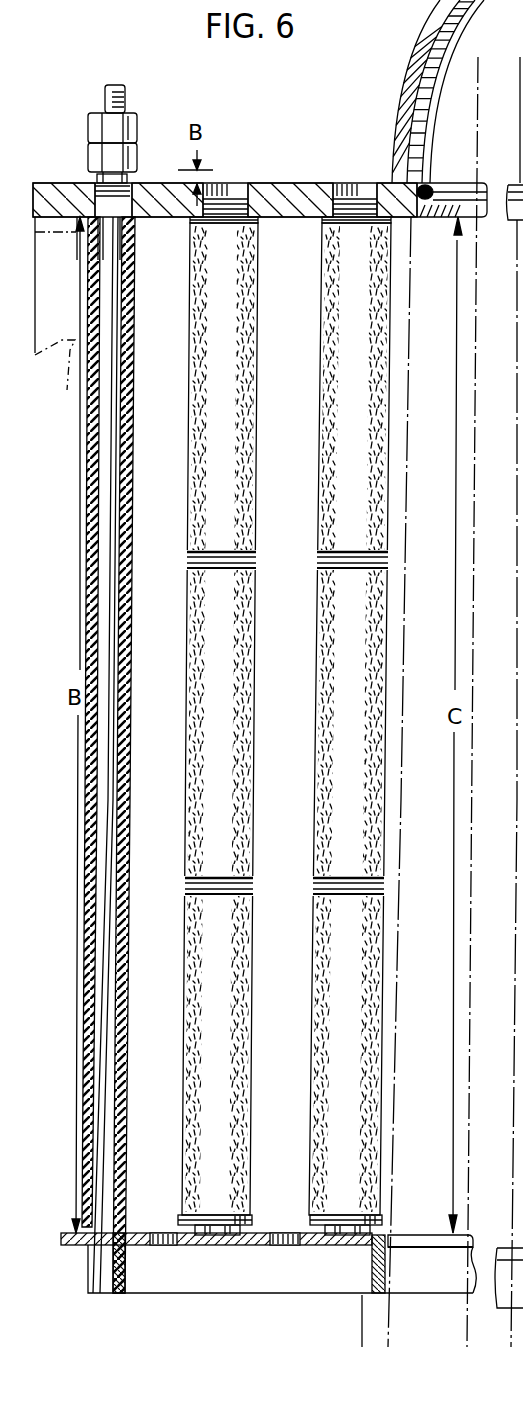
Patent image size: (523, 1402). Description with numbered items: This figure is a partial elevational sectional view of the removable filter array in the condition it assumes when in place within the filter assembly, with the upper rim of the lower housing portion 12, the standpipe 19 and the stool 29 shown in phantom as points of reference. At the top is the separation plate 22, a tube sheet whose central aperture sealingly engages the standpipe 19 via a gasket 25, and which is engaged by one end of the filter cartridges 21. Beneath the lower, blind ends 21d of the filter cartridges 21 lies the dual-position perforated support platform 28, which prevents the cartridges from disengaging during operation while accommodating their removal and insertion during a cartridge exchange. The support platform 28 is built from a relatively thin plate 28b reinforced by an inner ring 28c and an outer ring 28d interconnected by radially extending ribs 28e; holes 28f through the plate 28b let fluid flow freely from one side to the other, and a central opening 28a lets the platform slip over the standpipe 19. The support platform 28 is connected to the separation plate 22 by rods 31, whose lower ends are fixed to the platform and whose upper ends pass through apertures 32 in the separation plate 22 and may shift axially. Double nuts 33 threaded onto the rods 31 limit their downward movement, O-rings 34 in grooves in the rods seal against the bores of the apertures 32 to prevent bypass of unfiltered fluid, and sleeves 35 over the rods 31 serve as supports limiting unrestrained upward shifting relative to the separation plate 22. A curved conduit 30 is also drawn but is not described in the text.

The lower housing portion 12 is at (67, 722).
The standpipe 19 is at (403, 847).
The filter cartridge 21 is at (254, 816).
The lower blind end of filter cartridge 21d is at (185, 1225).
The separation plate 22 is at (277, 186).
The gasket 25 is at (427, 186).
The perforated support platform 28 is at (268, 1260).
The central opening 28a is at (398, 1234).
The thin plate 28b is at (216, 1251).
The inner ring 28c is at (372, 1268).
The outer ring 28d is at (128, 1282).
The rib 28e is at (307, 1285).
The hole 28f is at (196, 1262).
The stool 29 is at (360, 1322).
The curved inlet pipe 30 is at (430, 34).
The rod 31 is at (112, 85).
The aperture in separation plate 32 is at (138, 186).
The double nuts 33 is at (88, 149).
The O-ring 34 is at (97, 188).
The sleeve 35 is at (130, 917).